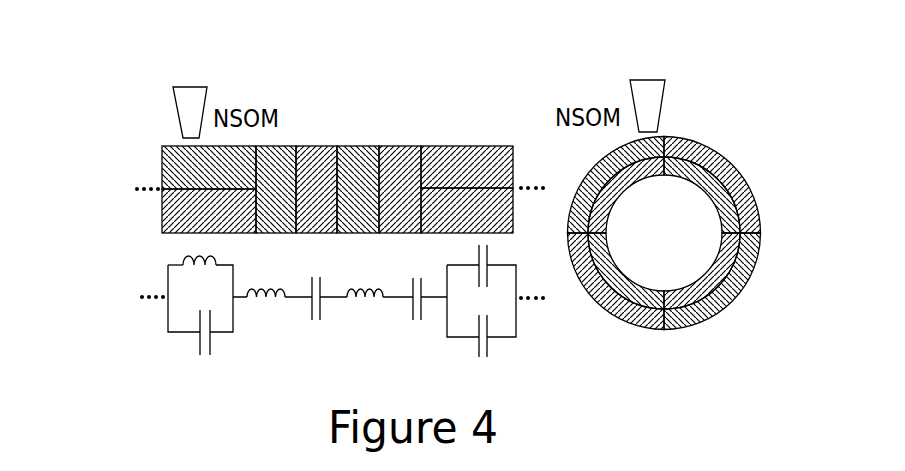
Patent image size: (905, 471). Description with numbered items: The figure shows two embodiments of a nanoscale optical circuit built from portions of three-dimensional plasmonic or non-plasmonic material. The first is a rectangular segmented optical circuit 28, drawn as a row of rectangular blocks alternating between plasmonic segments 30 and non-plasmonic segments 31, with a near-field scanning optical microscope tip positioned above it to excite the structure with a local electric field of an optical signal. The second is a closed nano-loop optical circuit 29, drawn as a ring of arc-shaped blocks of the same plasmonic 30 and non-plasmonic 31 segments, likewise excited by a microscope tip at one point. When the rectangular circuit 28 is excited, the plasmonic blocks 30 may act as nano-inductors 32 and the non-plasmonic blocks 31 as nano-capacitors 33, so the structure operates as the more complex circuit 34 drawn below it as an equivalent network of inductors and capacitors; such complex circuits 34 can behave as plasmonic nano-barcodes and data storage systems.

The rectangular segmented optical circuit 28 is at (316, 149).
The closed nano-loop optical circuit 29 is at (778, 218).
The plasmonic segment 30 is at (162, 165).
The non-plasmonic segment 31 is at (400, 147).
The nano-inductor 32 is at (200, 268).
The nano-capacitor 33 is at (412, 306).
The complex circuit 34 is at (322, 338).